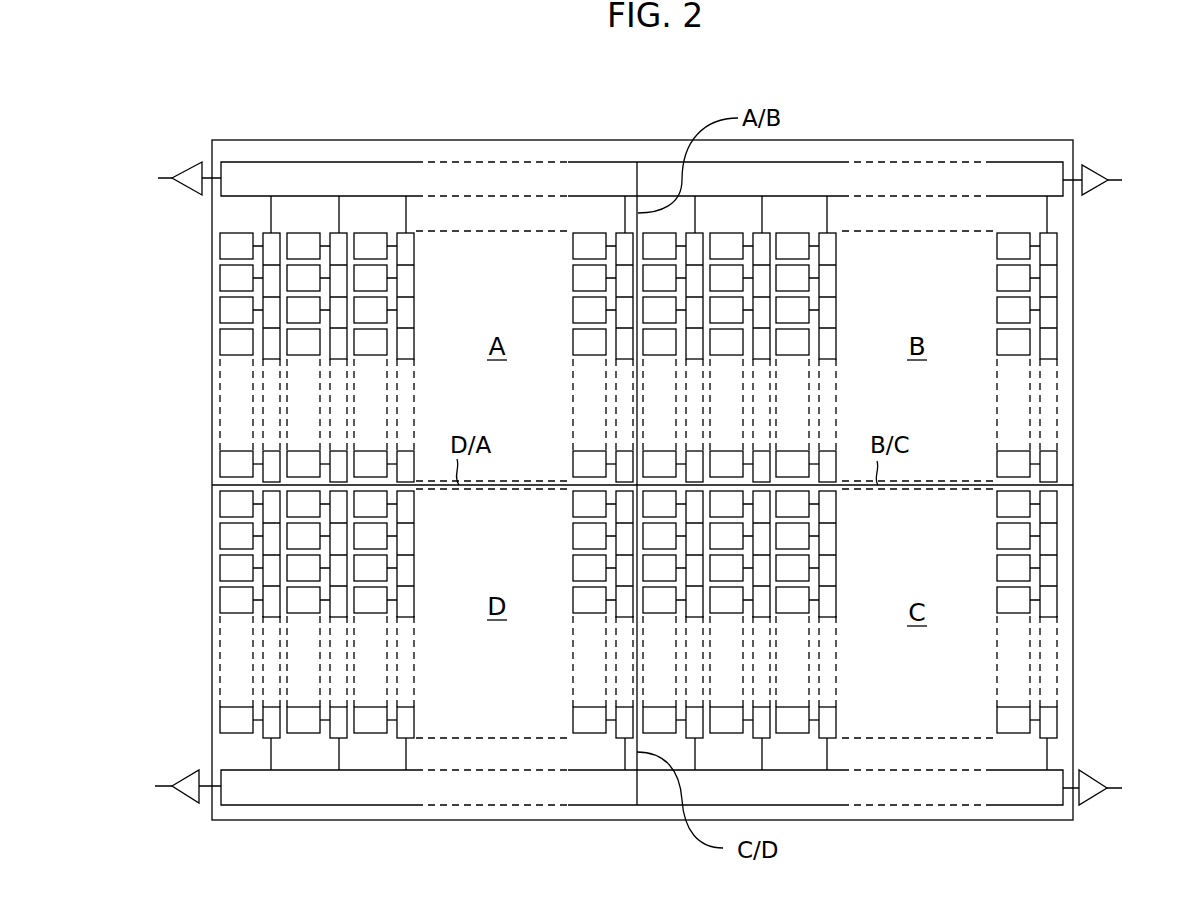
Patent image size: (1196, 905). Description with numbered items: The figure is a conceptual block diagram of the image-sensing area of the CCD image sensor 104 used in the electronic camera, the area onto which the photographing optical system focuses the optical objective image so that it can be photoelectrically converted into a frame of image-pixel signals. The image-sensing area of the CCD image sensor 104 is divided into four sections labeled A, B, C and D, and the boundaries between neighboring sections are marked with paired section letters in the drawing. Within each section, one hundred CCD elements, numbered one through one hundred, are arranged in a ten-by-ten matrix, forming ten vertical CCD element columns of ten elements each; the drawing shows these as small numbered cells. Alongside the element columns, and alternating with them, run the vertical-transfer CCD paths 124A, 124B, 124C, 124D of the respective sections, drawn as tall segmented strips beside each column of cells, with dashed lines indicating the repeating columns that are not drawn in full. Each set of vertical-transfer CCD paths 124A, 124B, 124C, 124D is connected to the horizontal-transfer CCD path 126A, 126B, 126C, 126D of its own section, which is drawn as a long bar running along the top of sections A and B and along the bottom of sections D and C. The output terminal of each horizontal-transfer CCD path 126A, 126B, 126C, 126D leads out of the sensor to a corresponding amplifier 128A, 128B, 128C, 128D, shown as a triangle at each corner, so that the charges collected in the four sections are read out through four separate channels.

The CCD image sensor 104 is at (609, 141).
The vertical-transfer CCD paths 124A is at (336, 232).
The vertical-transfer CCD paths 124B is at (834, 278).
The vertical-transfer CCD paths 124C is at (834, 537).
The vertical-transfer CCD paths 124D is at (405, 537).
The horizontal-transfer CCD path 126A is at (377, 176).
The horizontal-transfer CCD path 126B is at (1020, 177).
The horizontal-transfer CCD path 126C is at (960, 793).
The horizontal-transfer CCD path 126D is at (312, 792).
The amplifier 128A is at (197, 170).
The amplifier 128B is at (1082, 170).
The amplifier 128C is at (1115, 755).
The amplifier 128D is at (190, 773).